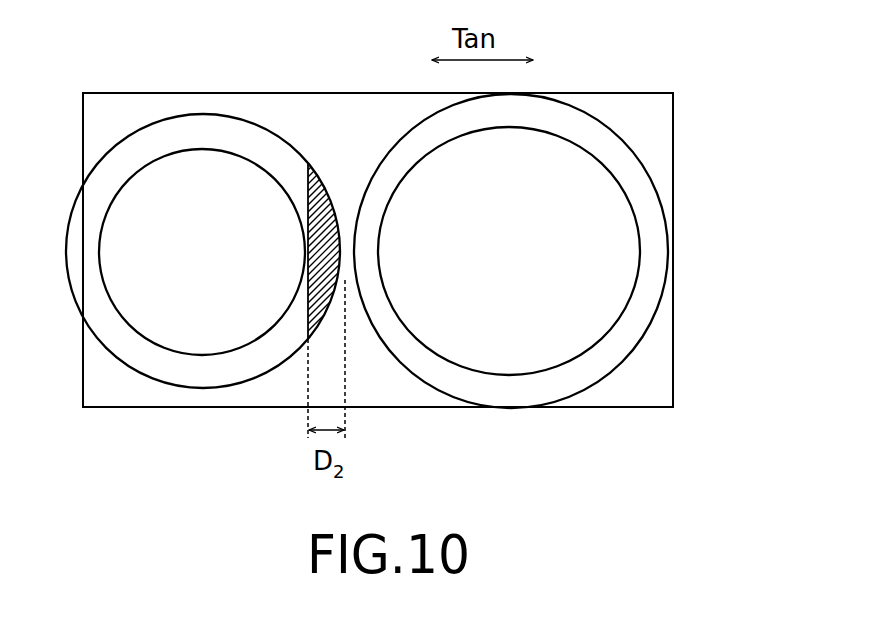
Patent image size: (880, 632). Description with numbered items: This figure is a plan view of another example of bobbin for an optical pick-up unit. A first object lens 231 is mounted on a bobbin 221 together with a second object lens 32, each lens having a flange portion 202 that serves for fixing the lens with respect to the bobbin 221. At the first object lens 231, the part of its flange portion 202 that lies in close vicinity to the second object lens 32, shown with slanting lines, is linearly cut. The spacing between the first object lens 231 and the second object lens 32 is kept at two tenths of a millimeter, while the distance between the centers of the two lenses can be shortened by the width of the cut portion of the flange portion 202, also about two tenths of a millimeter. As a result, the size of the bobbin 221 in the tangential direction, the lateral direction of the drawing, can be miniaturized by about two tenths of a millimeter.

The bobbin 221 is at (343, 108).
The flange portion 202 is at (182, 372).
The first object lens 231 is at (160, 175).
The second object lens 32 is at (608, 203).